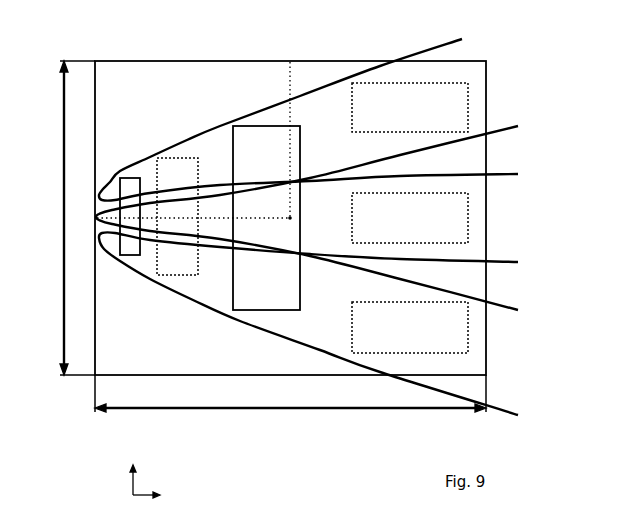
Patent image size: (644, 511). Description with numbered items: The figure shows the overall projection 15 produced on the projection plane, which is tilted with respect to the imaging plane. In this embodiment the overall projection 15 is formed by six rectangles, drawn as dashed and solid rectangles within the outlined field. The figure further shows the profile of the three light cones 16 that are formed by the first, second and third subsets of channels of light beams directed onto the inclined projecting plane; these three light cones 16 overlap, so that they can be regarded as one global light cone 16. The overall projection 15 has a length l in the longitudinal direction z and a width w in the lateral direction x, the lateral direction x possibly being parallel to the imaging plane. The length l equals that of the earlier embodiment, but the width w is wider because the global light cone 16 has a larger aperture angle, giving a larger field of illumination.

The overall projection 15 is at (130, 178).
The light cone 16 is at (172, 144).
The width w is at (63, 231).
The length l is at (318, 410).
The lateral direction x is at (132, 471).
The longitudinal direction z is at (156, 498).